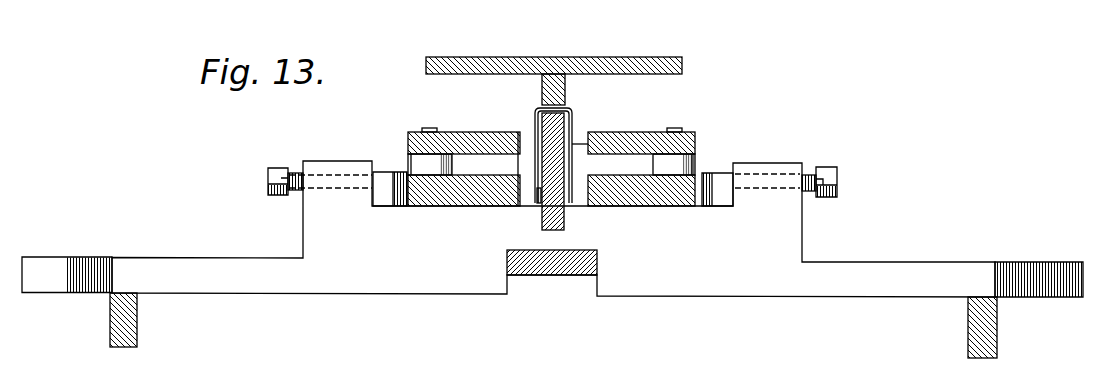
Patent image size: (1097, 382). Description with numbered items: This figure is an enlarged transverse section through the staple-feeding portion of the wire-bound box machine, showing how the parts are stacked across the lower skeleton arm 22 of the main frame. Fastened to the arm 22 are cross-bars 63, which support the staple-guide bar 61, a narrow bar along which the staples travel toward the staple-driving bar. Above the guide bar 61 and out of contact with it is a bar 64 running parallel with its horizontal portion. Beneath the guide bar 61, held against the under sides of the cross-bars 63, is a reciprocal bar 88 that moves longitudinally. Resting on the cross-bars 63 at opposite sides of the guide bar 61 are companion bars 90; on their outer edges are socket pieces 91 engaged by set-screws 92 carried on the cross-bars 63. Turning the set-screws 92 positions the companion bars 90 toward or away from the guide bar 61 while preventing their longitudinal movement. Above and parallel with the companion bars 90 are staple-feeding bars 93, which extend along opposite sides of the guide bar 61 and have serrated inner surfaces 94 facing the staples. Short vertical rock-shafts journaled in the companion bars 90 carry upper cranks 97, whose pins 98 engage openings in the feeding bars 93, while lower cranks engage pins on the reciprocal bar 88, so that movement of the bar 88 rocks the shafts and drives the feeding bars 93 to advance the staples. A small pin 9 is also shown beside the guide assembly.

The pin 9 is at (537, 190).
The lower skeleton arm 22 is at (138, 332).
The staple-guide bar 61 is at (540, 138).
The cross-bars 63 is at (552, 229).
The bar 64 is at (542, 90).
The reciprocal bar 88 is at (550, 277).
The companion bars 90 is at (465, 204).
The socket pieces 91 is at (403, 172).
The set-screws 92 is at (272, 167).
The staple-feeding bars 93 is at (462, 132).
The serrated inner surfaces 94 is at (545, 140).
The upper cranks 97 is at (455, 165).
The pins 98 is at (428, 128).